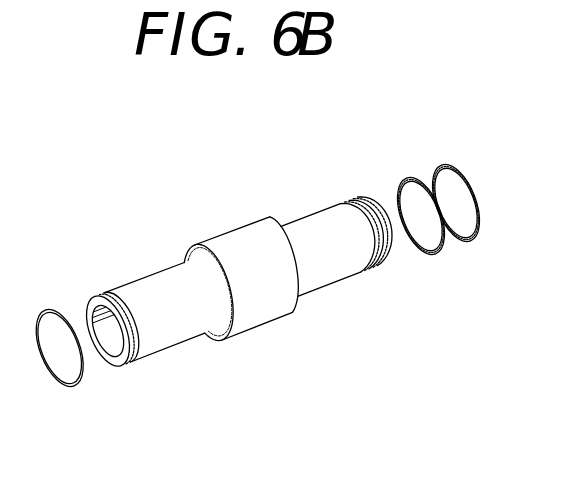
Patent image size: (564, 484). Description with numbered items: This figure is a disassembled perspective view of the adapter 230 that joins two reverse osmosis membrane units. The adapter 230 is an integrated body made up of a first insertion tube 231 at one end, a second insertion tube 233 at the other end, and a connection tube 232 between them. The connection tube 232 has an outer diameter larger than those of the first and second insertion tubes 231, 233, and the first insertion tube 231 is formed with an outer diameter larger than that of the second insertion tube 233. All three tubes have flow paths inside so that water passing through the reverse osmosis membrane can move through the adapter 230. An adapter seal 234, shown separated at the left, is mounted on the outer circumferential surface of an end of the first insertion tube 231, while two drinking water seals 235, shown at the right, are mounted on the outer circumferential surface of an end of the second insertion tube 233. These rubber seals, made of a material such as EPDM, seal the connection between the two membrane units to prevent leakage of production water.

The adapter 230 is at (218, 207).
The first insertion tube 231 is at (160, 334).
The connection tube 232 is at (250, 313).
The second insertion tube 233 is at (322, 275).
The adapter seal 234 is at (48, 311).
The drinking water seals 235 is at (436, 170).